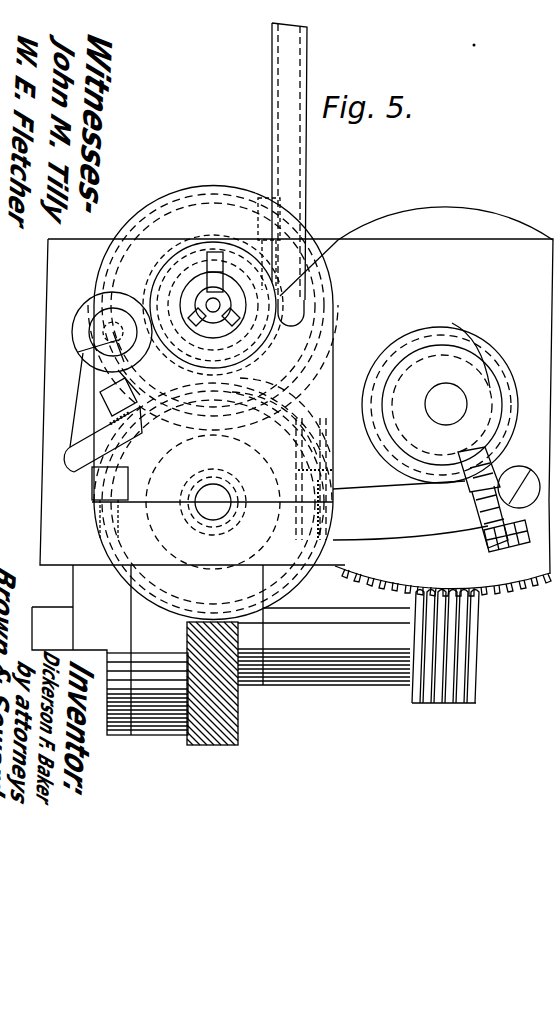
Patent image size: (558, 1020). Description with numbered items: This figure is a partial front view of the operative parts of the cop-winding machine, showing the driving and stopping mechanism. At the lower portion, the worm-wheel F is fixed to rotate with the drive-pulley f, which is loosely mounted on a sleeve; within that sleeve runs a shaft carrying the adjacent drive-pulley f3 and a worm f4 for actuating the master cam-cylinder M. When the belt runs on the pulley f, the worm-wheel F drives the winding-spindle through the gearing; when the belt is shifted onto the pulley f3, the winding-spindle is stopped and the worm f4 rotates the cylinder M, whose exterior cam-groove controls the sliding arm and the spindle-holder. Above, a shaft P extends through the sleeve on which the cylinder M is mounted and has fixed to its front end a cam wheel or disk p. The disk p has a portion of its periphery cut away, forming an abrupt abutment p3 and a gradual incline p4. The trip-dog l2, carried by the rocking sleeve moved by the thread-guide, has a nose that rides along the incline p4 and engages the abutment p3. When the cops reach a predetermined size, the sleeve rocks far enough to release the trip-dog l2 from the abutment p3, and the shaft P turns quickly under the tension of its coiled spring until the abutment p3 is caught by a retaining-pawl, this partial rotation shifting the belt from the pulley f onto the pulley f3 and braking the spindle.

The cam wheel or disk p is at (440, 405).
The shaft P is at (446, 404).
The abutment p3 is at (458, 462).
The gradual incline p4 is at (456, 327).
The trip-dog l2 is at (410, 510).
The master cam-cylinder M is at (528, 580).
The worm-wheel F is at (240, 723).
The drive-pulley f is at (170, 736).
The drive-pulley f3 is at (118, 737).
The worm f4 is at (462, 702).